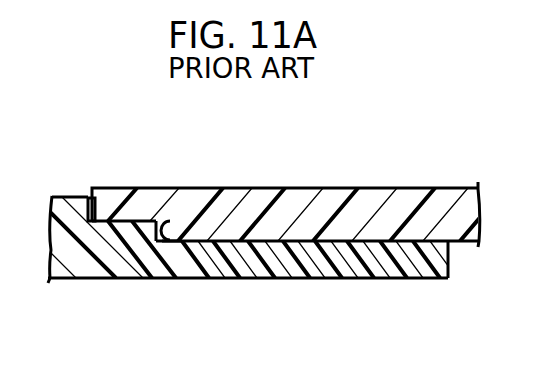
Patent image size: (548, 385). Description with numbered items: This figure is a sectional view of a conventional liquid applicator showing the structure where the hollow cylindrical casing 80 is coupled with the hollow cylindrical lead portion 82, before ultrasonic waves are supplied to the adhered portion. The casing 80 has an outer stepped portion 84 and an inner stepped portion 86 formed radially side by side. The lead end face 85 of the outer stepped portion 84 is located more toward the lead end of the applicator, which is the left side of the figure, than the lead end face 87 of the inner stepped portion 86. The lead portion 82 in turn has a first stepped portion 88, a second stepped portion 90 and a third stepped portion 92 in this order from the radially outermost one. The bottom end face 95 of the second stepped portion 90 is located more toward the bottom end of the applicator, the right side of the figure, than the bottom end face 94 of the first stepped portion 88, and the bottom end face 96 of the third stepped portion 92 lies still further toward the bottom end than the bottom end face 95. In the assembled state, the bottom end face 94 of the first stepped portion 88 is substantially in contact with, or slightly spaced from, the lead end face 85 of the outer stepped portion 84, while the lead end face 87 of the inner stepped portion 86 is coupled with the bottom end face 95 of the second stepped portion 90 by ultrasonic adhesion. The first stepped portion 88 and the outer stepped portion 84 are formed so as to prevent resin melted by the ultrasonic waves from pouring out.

The casing 80 is at (324, 186).
The lead portion 82 is at (268, 284).
The outer stepped portion 84 is at (112, 200).
The lead end face 85 is at (72, 235).
The inner stepped portion 86 is at (337, 233).
The lead end face 87 is at (168, 226).
The first stepped portion 88 is at (65, 196).
The second stepped portion 90 is at (147, 220).
The third stepped portion 92 is at (392, 261).
The bottom end face 94 is at (118, 222).
The bottom end face 95 is at (178, 243).
The bottom end face 96 is at (450, 250).